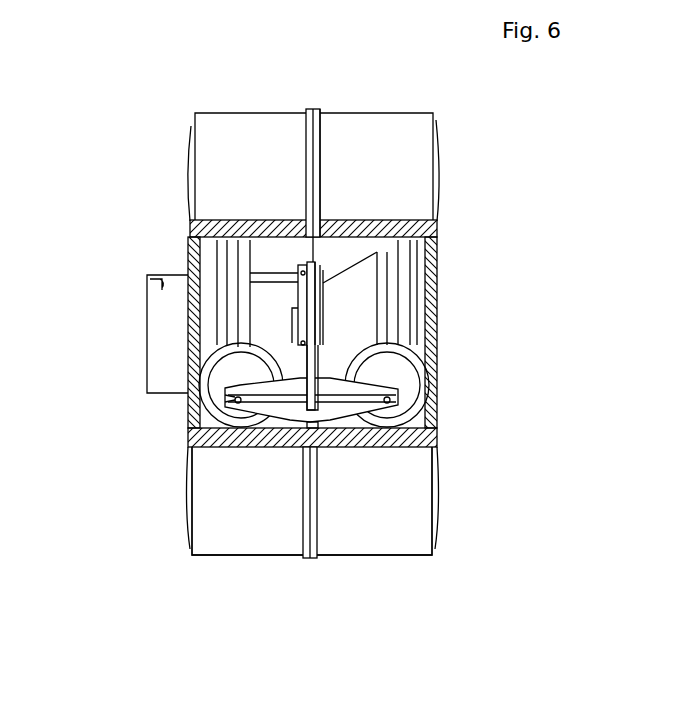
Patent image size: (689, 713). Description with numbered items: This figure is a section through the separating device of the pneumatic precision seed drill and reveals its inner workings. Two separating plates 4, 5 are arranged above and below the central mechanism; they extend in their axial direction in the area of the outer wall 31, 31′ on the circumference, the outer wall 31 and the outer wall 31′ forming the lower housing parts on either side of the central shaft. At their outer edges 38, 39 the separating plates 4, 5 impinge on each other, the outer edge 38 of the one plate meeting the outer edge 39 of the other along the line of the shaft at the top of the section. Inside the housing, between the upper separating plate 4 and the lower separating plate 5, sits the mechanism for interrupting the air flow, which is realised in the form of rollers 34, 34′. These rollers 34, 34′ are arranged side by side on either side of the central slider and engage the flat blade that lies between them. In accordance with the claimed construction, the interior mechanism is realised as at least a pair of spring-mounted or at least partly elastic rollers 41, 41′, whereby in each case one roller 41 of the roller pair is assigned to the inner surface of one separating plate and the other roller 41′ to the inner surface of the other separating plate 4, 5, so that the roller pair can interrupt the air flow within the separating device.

The separating plate 4 is at (188, 175).
The separating plate 5 is at (438, 488).
The outer wall 31 is at (252, 522).
The outer wall 31′ is at (352, 525).
The roller 34 is at (171, 414).
The roller 34′ is at (453, 377).
The outer edge 38 is at (307, 150).
The outer edge 39 is at (323, 167).
The roller 41 is at (185, 396).
The roller 41′ is at (405, 387).